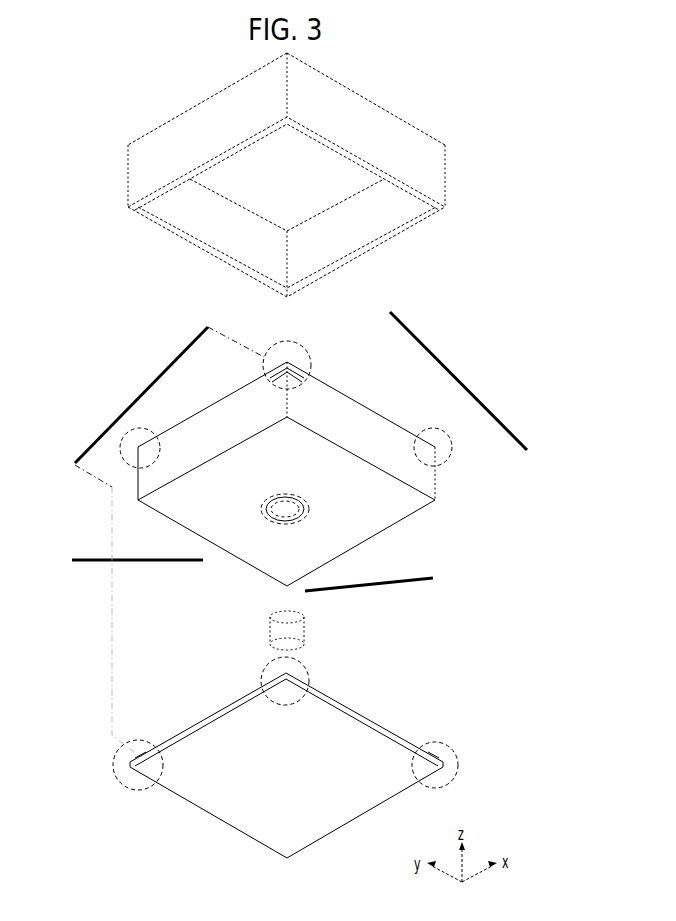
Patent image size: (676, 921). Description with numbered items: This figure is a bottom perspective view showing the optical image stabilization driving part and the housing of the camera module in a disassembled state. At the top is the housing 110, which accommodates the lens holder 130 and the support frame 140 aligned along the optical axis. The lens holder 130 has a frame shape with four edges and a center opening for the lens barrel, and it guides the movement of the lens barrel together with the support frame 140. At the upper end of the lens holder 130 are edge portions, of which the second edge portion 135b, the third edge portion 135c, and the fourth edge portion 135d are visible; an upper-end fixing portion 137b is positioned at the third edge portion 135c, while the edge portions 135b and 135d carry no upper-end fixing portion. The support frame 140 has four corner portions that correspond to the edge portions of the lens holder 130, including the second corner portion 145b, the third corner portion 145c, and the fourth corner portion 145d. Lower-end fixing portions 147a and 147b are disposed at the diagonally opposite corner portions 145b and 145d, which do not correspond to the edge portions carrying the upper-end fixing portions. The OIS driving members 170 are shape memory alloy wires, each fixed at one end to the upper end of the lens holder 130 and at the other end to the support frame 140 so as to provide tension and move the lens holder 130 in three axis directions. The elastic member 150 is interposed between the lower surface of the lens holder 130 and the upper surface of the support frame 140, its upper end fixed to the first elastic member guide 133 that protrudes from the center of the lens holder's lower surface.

The housing 110 is at (393, 125).
The lens holder 130 is at (423, 480).
The first elastic member guide 133 is at (267, 527).
The second edge portion 135b is at (427, 430).
The third edge portion 135c is at (302, 342).
The fourth edge portion 135d is at (145, 432).
The upper-end fixing portion 137b is at (300, 363).
The support frame 140 is at (352, 805).
The second corner portion 145b is at (460, 768).
The third corner portion 145c is at (310, 679).
The fourth corner portion 145d is at (113, 770).
The lower-end fixing portion 147a is at (437, 750).
The lower-end fixing portion 147b is at (137, 753).
The elastic member 150 is at (268, 632).
The OIS driving member 170 is at (460, 378).